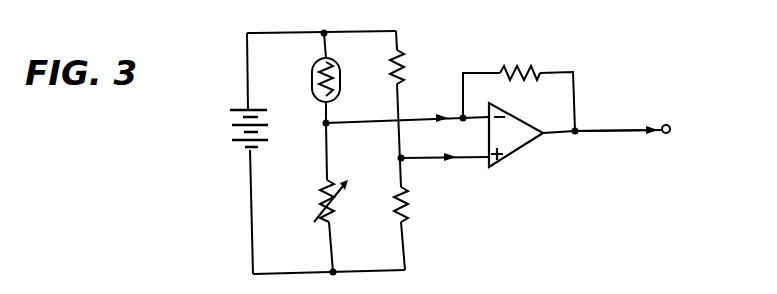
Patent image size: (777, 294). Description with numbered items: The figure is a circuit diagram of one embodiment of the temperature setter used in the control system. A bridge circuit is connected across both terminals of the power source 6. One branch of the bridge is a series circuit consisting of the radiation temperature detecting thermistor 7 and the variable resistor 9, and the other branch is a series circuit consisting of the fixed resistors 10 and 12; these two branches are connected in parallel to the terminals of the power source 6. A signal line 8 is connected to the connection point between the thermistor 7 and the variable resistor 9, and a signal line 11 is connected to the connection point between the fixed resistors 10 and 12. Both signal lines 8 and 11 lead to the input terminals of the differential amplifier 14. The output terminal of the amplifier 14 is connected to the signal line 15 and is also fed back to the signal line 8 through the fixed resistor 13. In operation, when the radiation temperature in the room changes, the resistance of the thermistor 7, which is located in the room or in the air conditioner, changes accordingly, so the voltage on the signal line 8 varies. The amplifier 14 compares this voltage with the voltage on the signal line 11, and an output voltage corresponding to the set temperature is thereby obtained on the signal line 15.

The power source 6 is at (230, 127).
The radiation temperature detecting thermistor 7 is at (340, 90).
The signal line 8 is at (423, 95).
The variable resistor 9 is at (318, 200).
The fixed resistor 10 is at (405, 56).
The signal line 11 is at (434, 158).
The fixed resistor 12 is at (410, 207).
The fixed resistor 13 is at (517, 62).
The differential amplifier 14 is at (520, 150).
The signal line 15 is at (611, 132).